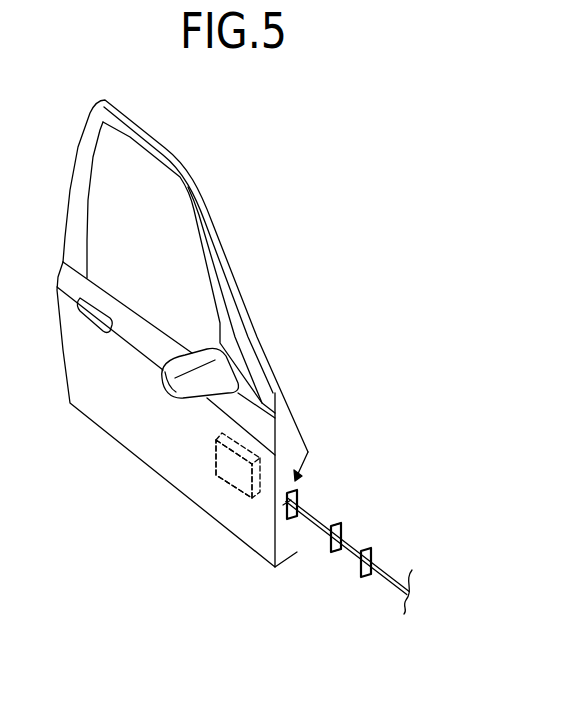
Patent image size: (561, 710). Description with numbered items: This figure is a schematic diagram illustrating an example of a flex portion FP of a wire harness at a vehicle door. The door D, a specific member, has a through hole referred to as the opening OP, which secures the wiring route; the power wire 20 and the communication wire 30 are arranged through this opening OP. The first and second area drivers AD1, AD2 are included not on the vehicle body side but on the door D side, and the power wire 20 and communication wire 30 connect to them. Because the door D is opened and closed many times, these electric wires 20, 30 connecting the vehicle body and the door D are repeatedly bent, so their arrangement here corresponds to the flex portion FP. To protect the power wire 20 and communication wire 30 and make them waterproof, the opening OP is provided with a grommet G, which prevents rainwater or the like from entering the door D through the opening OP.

The door D is at (233, 277).
The flex portion FP is at (313, 510).
The first area driver AD1 is at (216, 473).
The second area driver AD2 is at (234, 469).
The opening OP is at (290, 520).
The power wire 20 is at (322, 516).
The communication wire 30 is at (313, 510).
The grommet G is at (347, 532).